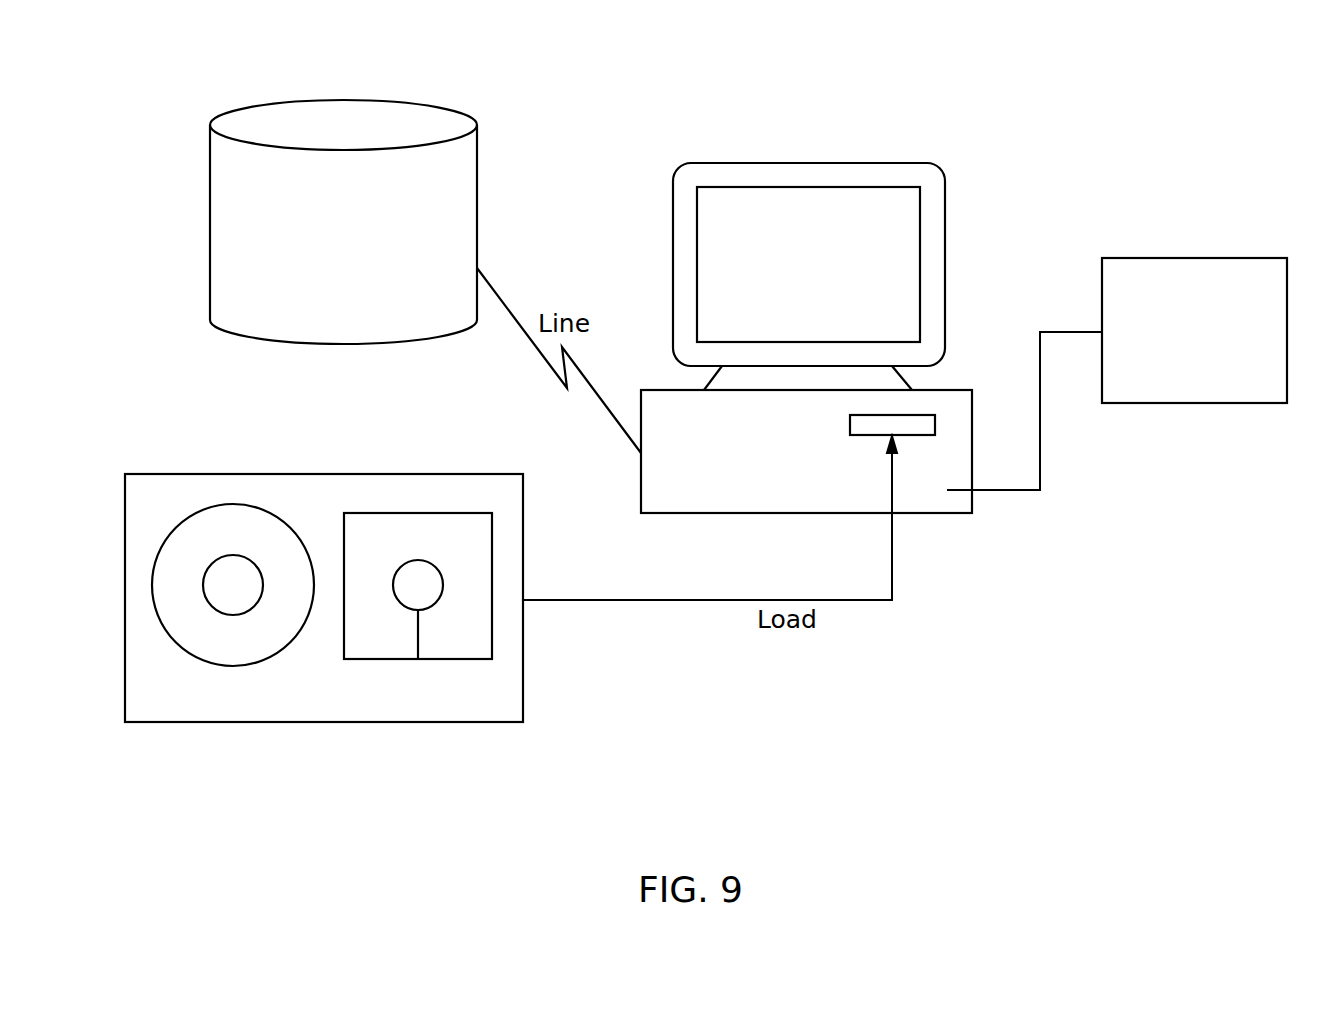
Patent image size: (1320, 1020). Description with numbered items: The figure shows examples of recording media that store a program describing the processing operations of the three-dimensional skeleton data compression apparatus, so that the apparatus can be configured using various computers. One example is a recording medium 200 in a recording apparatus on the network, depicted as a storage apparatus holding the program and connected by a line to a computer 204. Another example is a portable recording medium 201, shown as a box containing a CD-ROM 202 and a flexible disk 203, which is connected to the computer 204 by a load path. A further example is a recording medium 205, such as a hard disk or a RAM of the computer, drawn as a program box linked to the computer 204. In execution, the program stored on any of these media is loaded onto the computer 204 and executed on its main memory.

The recording medium 200 is at (424, 100).
The portable recording medium 201 is at (158, 473).
The CD-ROM 202 is at (255, 510).
The flexible disk 203 is at (413, 512).
The computer 204 is at (875, 162).
The recording medium 205 is at (1238, 257).